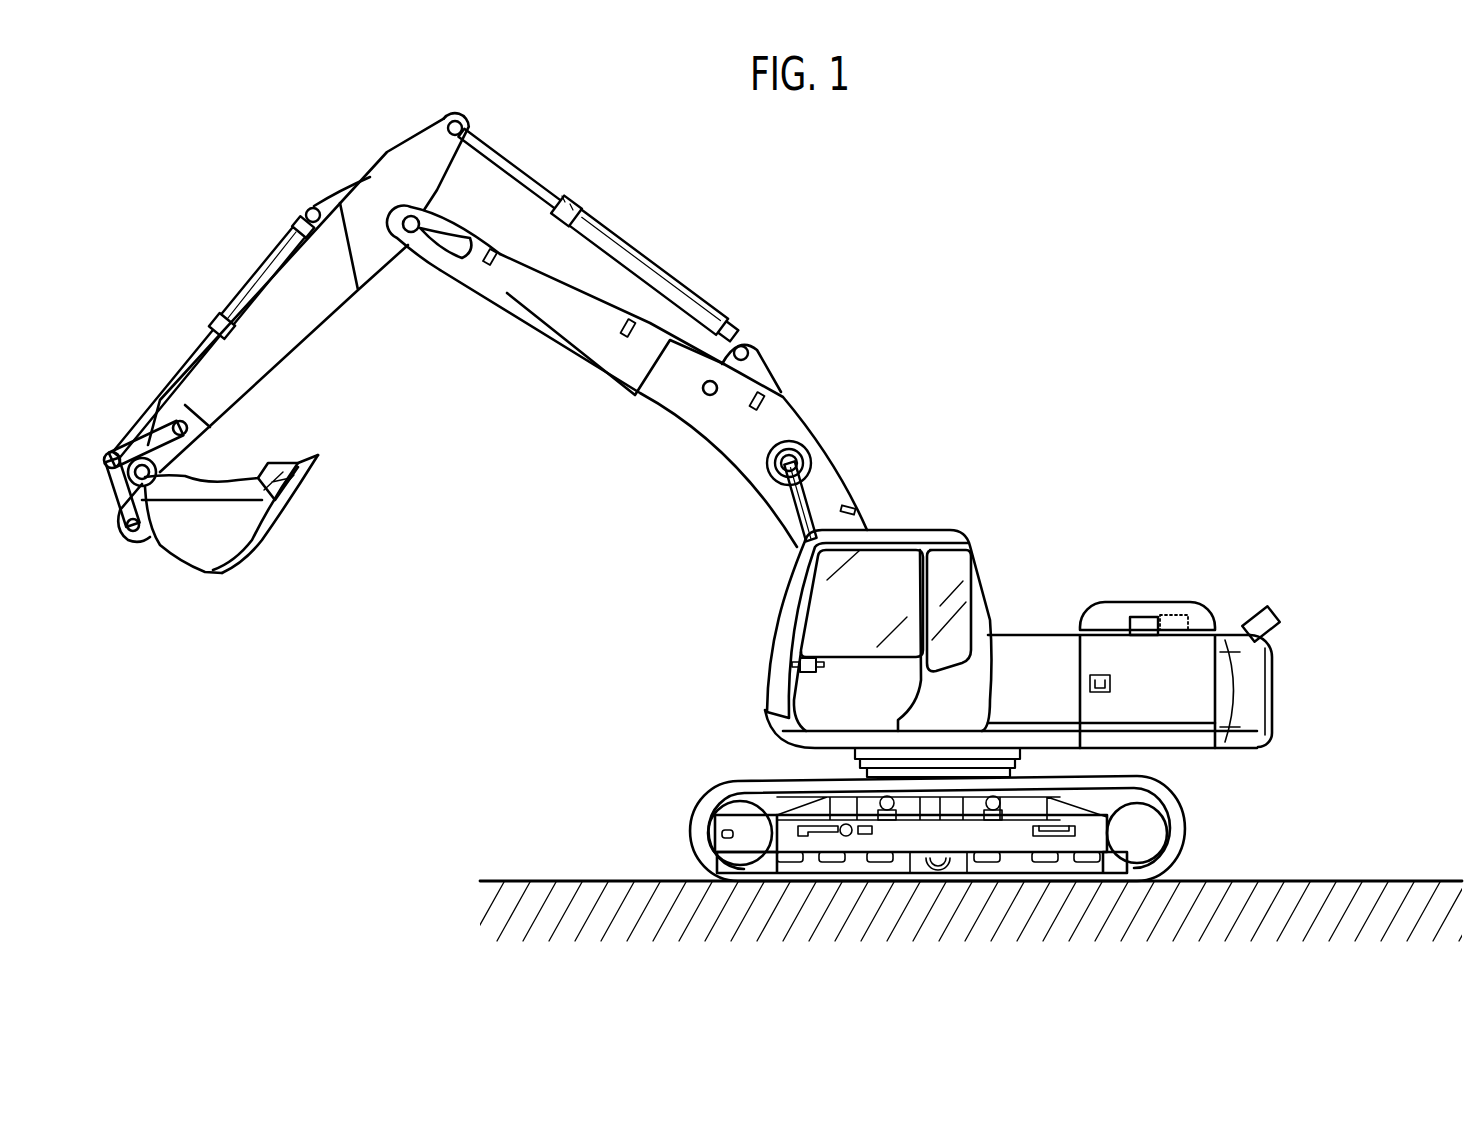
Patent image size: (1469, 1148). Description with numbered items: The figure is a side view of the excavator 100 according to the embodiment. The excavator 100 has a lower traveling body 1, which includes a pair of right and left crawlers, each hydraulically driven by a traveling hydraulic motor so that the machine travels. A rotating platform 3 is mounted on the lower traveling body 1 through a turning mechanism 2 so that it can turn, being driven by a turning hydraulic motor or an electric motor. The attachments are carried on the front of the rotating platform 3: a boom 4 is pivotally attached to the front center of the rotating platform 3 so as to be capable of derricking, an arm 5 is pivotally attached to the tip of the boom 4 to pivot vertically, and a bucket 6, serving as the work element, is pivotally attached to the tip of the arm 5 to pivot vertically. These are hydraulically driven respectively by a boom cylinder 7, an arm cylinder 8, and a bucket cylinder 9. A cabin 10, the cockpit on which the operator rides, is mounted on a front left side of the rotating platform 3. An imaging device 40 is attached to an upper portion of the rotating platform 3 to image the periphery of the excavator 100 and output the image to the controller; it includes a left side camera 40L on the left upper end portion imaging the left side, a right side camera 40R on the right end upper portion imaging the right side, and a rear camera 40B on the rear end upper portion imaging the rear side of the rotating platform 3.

The excavator 100 is at (1020, 350).
The lower traveling body 1 is at (690, 833).
The turning mechanism 2 is at (1017, 765).
The rotating platform 3 is at (1020, 635).
The boom 4 is at (687, 410).
The arm 5 is at (323, 310).
The bucket 6 is at (207, 560).
The boom cylinder 7 is at (800, 507).
The arm cylinder 8 is at (662, 290).
The bucket cylinder 9 is at (243, 288).
The cabin 10 is at (957, 530).
The imaging device 40 is at (1343, 501).
The left side camera 40L is at (1139, 616).
The right side camera 40R is at (1181, 614).
The rear camera 40B is at (1272, 610).